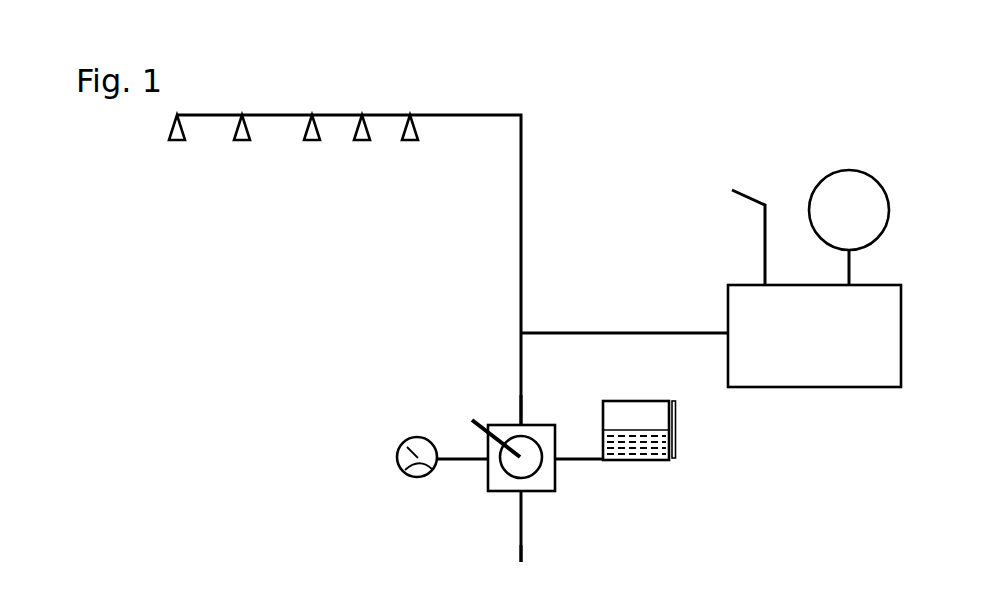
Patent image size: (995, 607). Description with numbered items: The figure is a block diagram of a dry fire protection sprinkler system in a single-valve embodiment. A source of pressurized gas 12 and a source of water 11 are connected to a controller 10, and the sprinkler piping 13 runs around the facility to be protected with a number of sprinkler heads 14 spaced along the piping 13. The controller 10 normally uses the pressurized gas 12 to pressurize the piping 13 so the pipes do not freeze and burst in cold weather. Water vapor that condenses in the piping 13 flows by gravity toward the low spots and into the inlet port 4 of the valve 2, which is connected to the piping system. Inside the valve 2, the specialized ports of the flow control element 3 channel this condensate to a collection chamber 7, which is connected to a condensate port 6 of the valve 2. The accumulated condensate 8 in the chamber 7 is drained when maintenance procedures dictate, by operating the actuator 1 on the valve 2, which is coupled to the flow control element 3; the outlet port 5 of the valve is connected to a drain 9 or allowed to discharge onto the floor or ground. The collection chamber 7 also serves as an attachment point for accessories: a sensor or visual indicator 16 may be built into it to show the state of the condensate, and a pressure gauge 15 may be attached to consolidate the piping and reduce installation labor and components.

The actuator 1 is at (458, 420).
The valve 2 is at (543, 489).
The flow control element 3 is at (502, 470).
The inlet port 4 is at (517, 424).
The outlet port 5 is at (518, 496).
The condensate port 6 is at (560, 467).
The collection chamber 7 is at (638, 400).
The condensate 8 is at (655, 453).
The drain 9 is at (522, 567).
The controller 10 is at (814, 336).
The water 11 is at (737, 228).
The pressurized gas 12 is at (847, 203).
The sprinkler piping 13 is at (524, 218).
The sprinkler heads 14 is at (236, 150).
The pressure gauge 15 is at (394, 458).
The sensor or visual indicator 16 is at (677, 422).